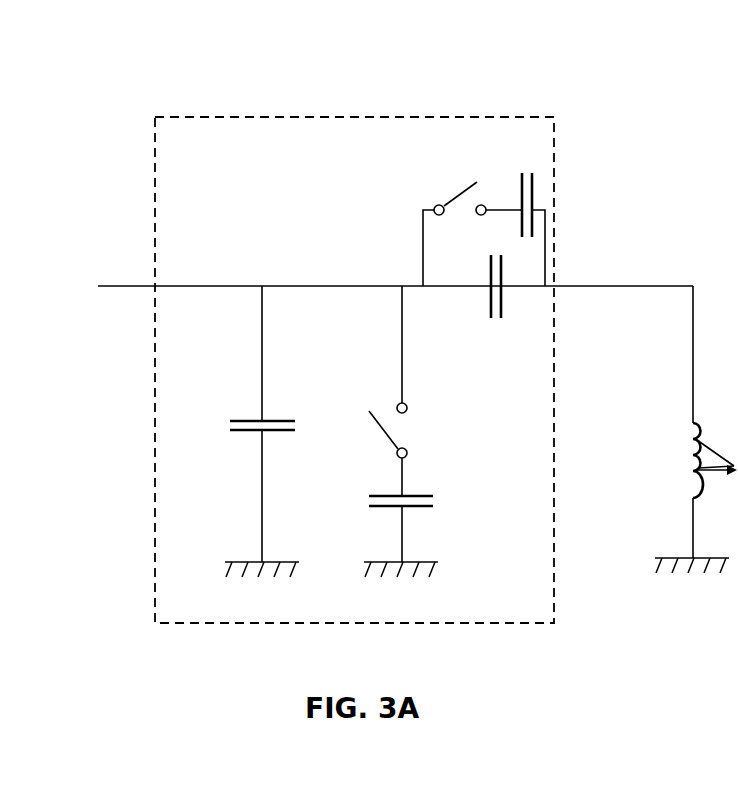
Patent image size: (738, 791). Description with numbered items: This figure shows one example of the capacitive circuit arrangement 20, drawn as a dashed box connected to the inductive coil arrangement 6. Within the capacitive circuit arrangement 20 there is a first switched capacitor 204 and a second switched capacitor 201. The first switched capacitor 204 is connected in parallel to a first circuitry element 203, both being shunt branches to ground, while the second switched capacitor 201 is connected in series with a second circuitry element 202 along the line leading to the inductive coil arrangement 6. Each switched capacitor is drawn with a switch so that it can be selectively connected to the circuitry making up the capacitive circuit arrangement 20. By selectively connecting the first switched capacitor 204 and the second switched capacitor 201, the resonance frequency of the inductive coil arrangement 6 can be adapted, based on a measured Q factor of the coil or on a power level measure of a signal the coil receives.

The capacitive circuit arrangement 20 is at (240, 87).
The second switched capacitor 201 is at (543, 200).
The second circuitry element 202 is at (483, 297).
The first circuitry element 203 is at (253, 415).
The first switched capacitor 204 is at (395, 510).
The inductive coil arrangement 6 is at (675, 482).